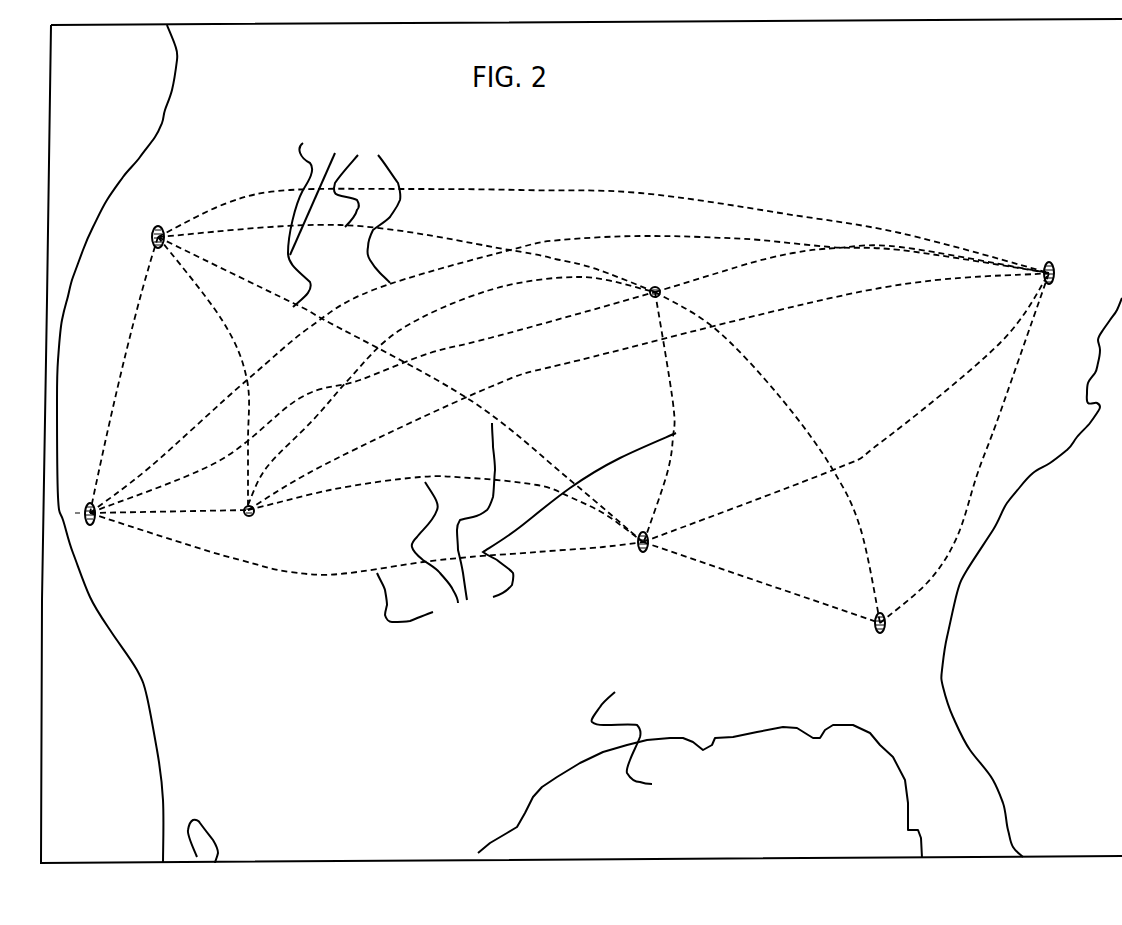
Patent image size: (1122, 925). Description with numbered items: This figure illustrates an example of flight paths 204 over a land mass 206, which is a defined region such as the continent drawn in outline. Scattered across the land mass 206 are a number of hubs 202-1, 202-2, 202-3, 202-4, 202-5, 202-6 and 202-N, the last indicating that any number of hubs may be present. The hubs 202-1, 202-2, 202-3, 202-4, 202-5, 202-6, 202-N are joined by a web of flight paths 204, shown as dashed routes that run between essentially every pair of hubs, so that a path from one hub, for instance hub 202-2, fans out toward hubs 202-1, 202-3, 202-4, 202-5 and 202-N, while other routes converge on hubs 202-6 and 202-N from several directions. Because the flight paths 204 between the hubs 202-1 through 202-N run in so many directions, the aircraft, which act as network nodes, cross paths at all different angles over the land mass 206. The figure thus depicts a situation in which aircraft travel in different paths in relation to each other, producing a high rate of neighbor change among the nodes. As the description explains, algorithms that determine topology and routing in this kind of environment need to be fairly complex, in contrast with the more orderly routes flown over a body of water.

The hub 202-1 is at (158, 228).
The hub 202-2 is at (88, 525).
The hub 202-3 is at (246, 518).
The hub 202-4 is at (663, 298).
The hub 202-5 is at (640, 552).
The hub 202-6 is at (874, 622).
The hub 202-N is at (1053, 262).
The flight paths 204 is at (303, 143).
The land mass 206 is at (652, 784).